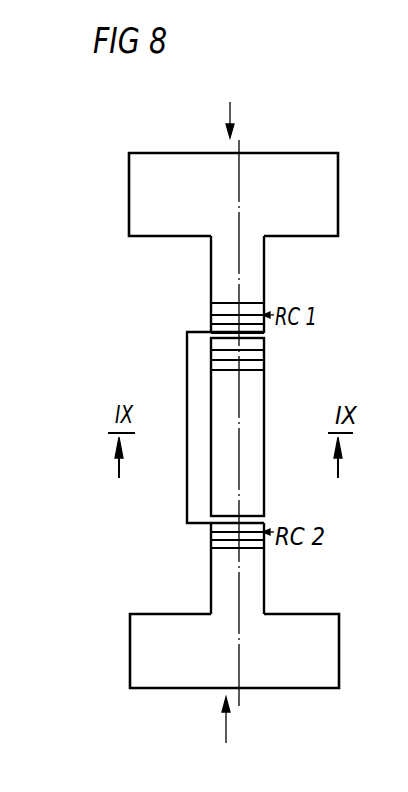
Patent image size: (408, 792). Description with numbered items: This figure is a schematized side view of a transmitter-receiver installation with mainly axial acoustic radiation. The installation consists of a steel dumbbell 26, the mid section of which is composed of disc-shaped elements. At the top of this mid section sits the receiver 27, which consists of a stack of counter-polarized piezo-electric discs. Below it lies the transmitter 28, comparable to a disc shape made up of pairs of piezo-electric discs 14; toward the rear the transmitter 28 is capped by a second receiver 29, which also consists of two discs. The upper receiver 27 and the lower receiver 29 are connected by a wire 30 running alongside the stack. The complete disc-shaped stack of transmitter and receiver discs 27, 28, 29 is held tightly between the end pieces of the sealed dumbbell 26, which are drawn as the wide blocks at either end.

The steel dumbbell 26 is at (148, 197).
The receiver 27 is at (210, 323).
The wire 30 is at (186, 381).
The transmitter 28 is at (264, 457).
The notches 14 is at (270, 350).
The second receiver 29 is at (210, 540).